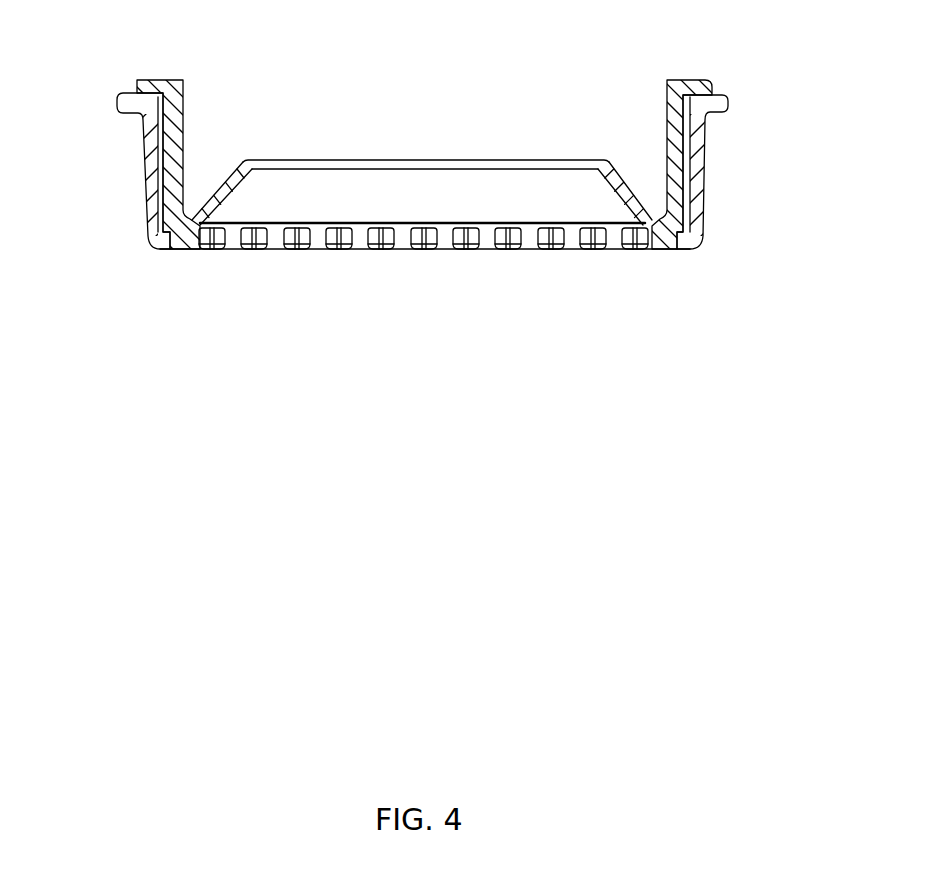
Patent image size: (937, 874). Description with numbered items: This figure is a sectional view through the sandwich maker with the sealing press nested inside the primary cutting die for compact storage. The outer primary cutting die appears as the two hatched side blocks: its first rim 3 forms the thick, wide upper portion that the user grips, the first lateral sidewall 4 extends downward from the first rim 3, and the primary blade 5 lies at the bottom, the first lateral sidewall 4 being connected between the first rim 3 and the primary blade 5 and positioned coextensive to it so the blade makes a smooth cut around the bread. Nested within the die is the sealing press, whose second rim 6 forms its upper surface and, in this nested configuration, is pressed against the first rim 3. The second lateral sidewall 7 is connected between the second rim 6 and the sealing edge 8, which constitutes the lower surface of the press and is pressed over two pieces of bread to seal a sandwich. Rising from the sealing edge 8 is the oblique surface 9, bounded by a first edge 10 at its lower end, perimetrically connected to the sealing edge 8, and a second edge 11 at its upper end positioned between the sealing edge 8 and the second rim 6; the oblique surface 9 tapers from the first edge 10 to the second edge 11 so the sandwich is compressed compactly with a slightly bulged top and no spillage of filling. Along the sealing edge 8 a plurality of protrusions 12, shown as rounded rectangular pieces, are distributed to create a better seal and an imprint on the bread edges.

The first rim 3 is at (724, 101).
The first lateral sidewall 4 is at (704, 172).
The primary blade 5 is at (443, 246).
The second rim 6 is at (143, 80).
The second lateral sidewall 7 is at (181, 107).
The sealing edge 8 is at (258, 231).
The oblique surface 9 is at (631, 183).
The first edge 10 is at (327, 223).
The second edge 11 is at (501, 167).
The plurality of protrusions 12 is at (220, 246).